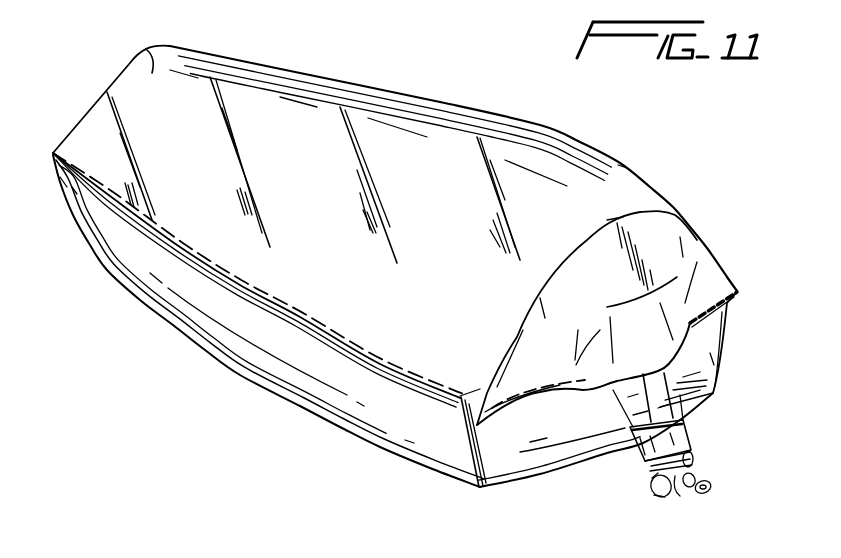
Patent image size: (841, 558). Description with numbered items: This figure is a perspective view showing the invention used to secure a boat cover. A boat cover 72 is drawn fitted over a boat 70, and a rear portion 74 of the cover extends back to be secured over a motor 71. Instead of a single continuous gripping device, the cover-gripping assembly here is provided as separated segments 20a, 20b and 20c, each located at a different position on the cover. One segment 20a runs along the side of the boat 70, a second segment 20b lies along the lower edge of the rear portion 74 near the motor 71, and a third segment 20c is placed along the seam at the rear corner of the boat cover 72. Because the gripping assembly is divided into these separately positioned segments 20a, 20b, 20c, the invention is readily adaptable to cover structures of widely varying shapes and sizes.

The boat 70 is at (263, 333).
The boat cover 72 is at (367, 159).
The separated segment 20a is at (407, 380).
The separated segment 20b is at (540, 397).
The separated segment 20c is at (712, 320).
The motor 71 is at (683, 428).
The rear portion 74 is at (500, 395).